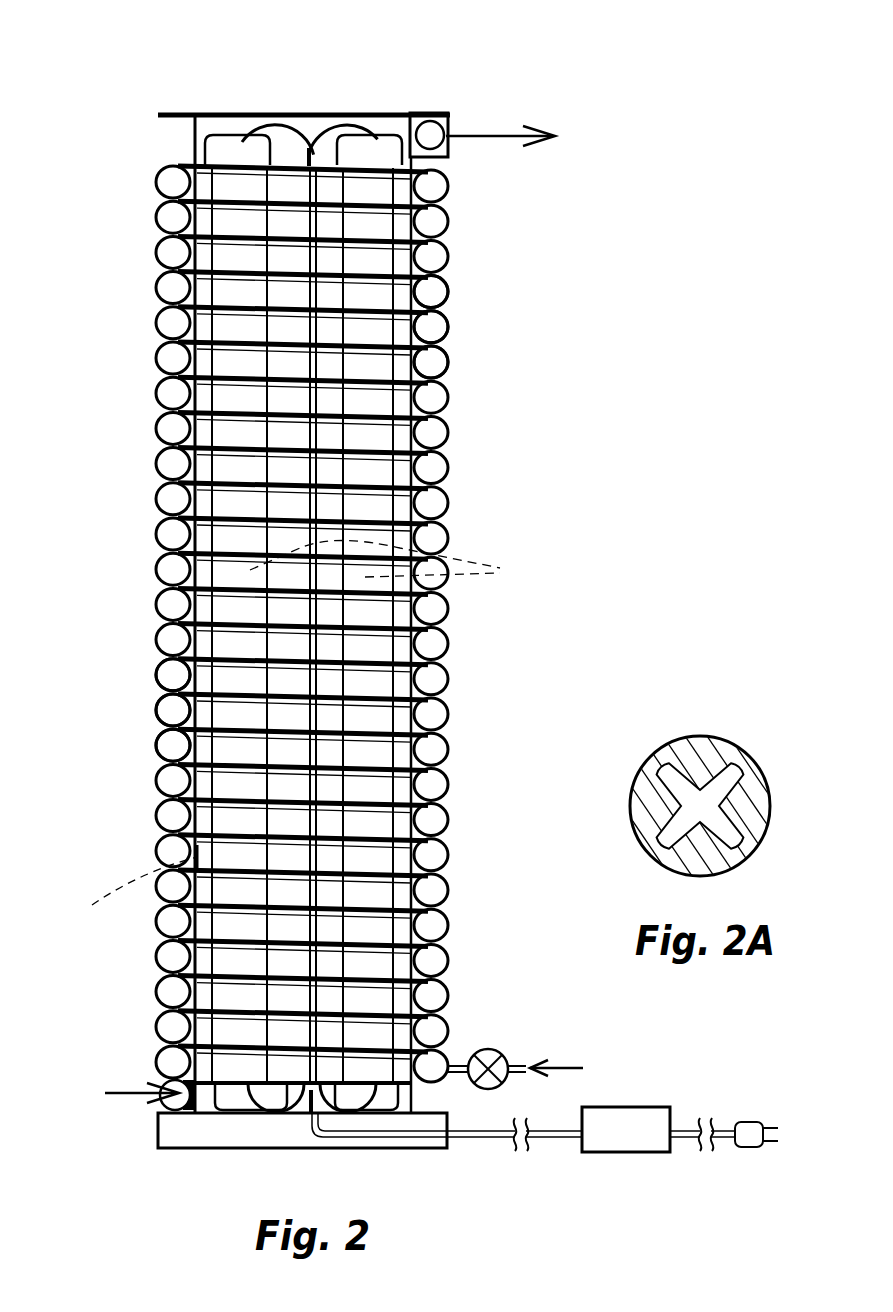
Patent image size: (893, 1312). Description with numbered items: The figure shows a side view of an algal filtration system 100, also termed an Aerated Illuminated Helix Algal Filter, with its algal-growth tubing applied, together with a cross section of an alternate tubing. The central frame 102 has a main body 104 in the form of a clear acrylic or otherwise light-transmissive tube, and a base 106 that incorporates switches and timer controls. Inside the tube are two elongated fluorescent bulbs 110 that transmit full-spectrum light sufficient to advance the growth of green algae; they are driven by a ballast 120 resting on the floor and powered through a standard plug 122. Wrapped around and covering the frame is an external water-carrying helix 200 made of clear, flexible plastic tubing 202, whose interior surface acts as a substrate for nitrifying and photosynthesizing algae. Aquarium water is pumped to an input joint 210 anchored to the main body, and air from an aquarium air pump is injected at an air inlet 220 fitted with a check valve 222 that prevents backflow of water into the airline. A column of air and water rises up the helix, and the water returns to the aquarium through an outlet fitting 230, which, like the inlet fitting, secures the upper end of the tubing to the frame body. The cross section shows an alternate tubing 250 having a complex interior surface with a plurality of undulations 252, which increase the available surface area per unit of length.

In FIG. 2, the algal filtration system 100 is at (503, 511).
In FIG. 2, the central frame 102 is at (378, 103).
In FIG. 2, the main body tube 104 is at (122, 887).
In FIG. 2, the base 106 is at (446, 1115).
In FIG. 2, the fluorescent bulbs 110 is at (402, 564).
In FIG. 2, the ballast 120 is at (620, 1143).
In FIG. 2, the plug 122 is at (755, 1150).
In FIG. 2, the water-carrying helix 200 is at (468, 225).
In FIG. 2, the tubing 202 is at (448, 300).
In FIG. 2, the input joint 210 is at (173, 1107).
In FIG. 2, the air inlet 220 is at (458, 1062).
In FIG. 2, the check valve 222 is at (497, 1050).
In FIG. 2, the outlet fitting 230 is at (442, 128).
In FIG. 2A, the tubing with complex interior surface 250 is at (710, 775).
In FIG. 2A, the undulations 252 is at (679, 811).